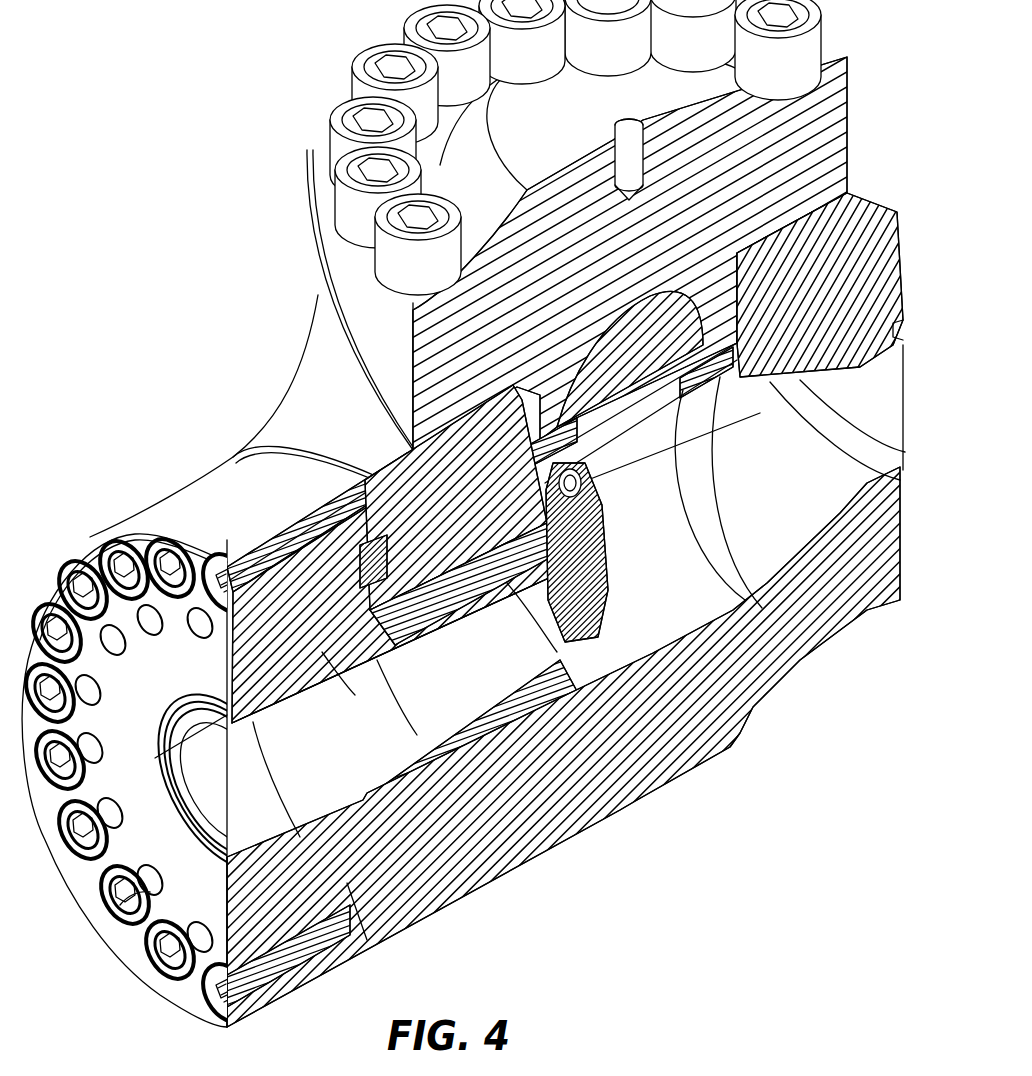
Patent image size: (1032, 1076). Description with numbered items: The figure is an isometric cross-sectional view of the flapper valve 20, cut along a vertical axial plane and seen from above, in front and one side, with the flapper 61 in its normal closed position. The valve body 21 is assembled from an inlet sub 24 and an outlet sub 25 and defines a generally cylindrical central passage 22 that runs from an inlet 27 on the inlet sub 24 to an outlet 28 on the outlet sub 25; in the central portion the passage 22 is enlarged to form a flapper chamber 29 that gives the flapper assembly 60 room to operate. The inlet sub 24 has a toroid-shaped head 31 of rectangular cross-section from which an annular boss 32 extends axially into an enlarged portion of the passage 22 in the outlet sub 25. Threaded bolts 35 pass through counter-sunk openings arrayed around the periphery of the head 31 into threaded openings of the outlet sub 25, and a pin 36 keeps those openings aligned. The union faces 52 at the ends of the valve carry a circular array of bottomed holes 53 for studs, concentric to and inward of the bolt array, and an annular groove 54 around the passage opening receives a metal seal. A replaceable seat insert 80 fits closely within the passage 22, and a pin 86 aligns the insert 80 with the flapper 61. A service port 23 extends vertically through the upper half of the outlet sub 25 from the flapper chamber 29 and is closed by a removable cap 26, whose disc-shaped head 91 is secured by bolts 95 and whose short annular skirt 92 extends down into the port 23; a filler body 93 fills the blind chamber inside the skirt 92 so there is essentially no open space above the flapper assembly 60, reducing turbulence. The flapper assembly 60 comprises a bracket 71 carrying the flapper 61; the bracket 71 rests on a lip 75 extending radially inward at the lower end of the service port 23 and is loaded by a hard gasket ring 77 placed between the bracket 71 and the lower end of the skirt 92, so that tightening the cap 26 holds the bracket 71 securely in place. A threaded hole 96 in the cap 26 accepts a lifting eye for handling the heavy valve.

The flapper valve 20 is at (224, 166).
The valve body 21 is at (300, 411).
The central passage 22 is at (320, 755).
The service port 23 is at (650, 421).
The inlet sub 24 is at (183, 505).
The outlet sub 25 is at (568, 812).
The cap 26 is at (350, 300).
The inlet 27 is at (207, 813).
The outlet 28 is at (875, 445).
The flapper chamber 29 is at (693, 525).
The head 31 is at (331, 652).
The annular boss 32 is at (386, 627).
The threaded bolts 35 is at (63, 563).
The pin 36 is at (302, 520).
The union faces 52 is at (155, 851).
The holes 53 is at (157, 897).
The annular groove 54 is at (170, 720).
The flapper assembly 60 is at (590, 456).
The flapper 61 is at (597, 612).
The bracket 71 is at (731, 393).
The lip 75 is at (512, 461).
The gasket ring 77 is at (542, 420).
The seat insert 80 is at (517, 695).
The pin 86 is at (427, 623).
The head 91 is at (828, 118).
The annular skirt 92 is at (740, 302).
The filler body 93 is at (623, 328).
The bolts 95 is at (803, 38).
The threaded hole 96 is at (625, 124).